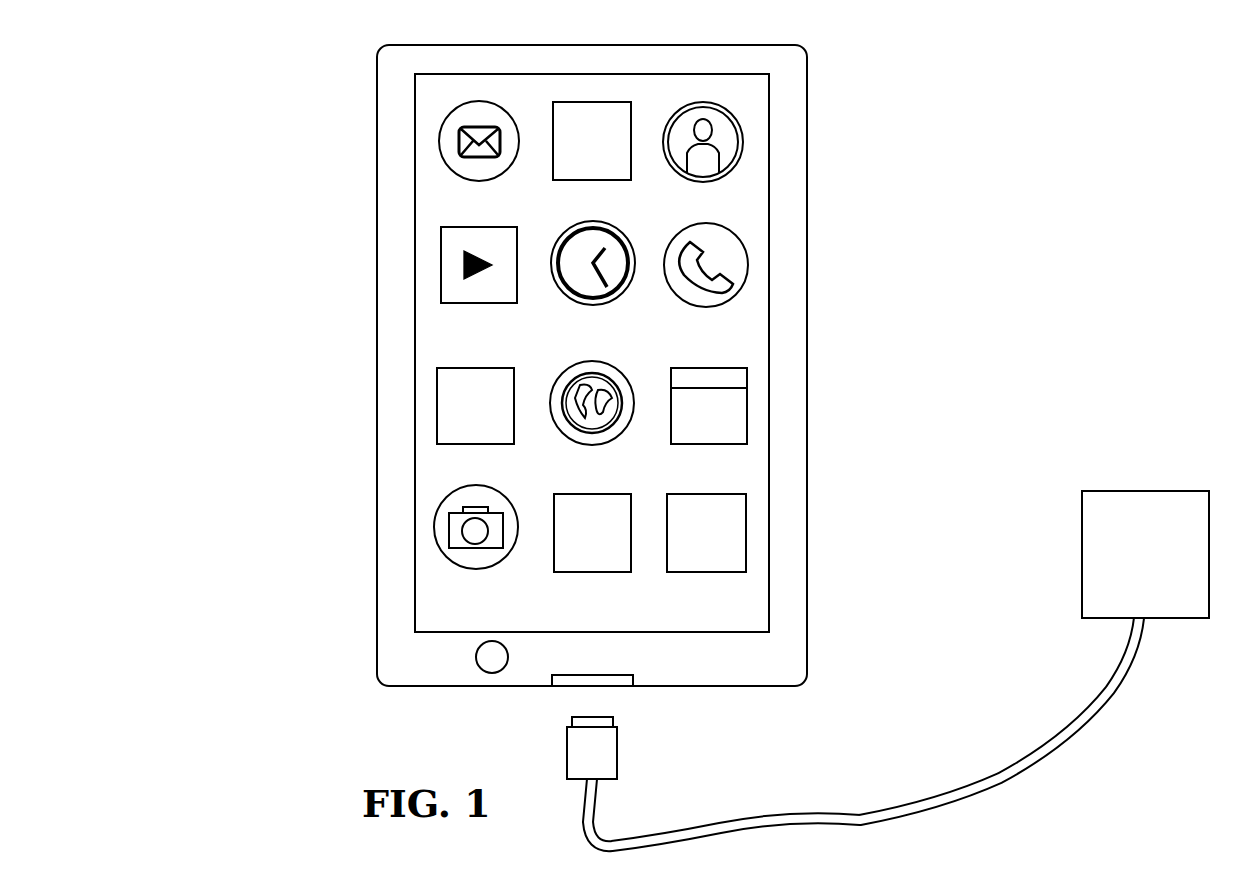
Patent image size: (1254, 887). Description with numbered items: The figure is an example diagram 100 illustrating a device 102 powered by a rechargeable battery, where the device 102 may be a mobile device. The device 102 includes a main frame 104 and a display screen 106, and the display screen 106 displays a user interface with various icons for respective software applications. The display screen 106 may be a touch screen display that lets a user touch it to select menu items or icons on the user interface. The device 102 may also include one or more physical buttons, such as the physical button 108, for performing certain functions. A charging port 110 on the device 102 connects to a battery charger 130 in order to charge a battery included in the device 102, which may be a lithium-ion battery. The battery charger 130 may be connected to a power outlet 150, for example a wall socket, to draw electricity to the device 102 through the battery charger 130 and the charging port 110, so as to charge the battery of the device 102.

The example diagram 100 is at (210, 72).
The device 102 is at (378, 58).
The main frame 104 is at (379, 449).
The display screen 106 is at (424, 331).
The physical button 108 is at (487, 663).
The charging port 110 is at (624, 684).
The battery charger 130 is at (572, 768).
The power outlet 150 is at (1203, 498).